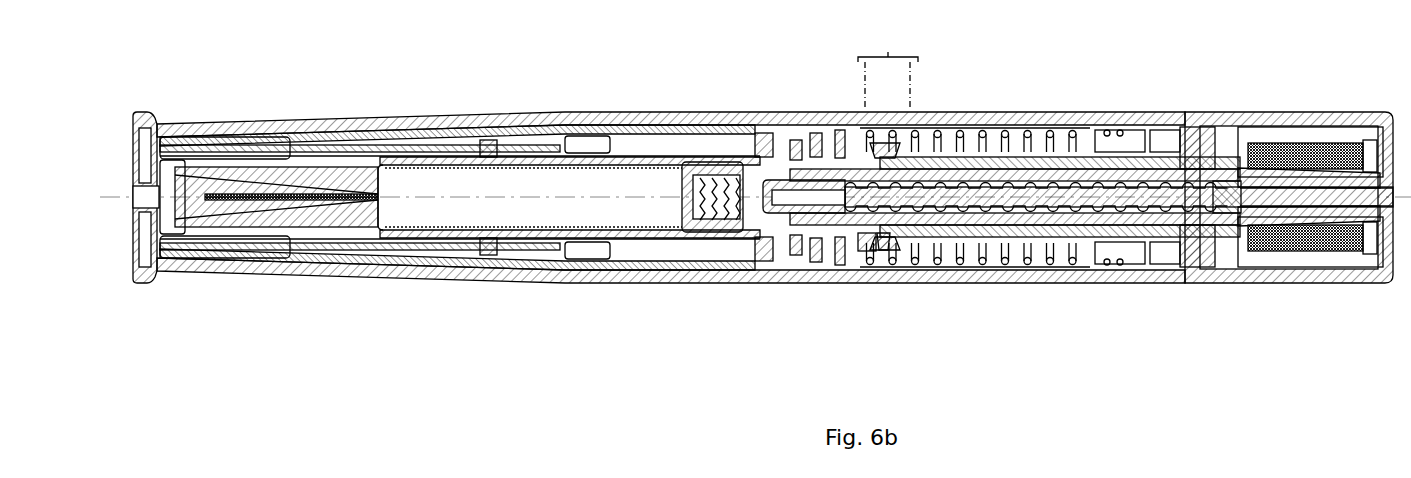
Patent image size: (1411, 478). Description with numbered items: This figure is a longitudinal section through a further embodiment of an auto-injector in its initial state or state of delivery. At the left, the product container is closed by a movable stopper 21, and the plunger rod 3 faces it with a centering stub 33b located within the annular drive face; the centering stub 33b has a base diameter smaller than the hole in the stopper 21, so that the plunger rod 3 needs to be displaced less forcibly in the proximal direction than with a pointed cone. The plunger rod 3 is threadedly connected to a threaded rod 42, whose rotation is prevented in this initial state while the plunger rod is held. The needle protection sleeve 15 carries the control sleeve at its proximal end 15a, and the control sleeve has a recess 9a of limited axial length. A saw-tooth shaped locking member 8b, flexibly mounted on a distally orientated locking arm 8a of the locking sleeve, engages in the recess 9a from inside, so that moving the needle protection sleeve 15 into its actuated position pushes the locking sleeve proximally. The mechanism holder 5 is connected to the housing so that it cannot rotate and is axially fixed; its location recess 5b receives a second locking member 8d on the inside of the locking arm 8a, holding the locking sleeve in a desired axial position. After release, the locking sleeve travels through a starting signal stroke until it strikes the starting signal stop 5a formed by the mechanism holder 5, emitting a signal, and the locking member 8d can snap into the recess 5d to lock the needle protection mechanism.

The needle protection sleeve 15 is at (700, 128).
The proximal end of the needle protection sleeve 15a is at (835, 130).
The recess 9a is at (888, 66).
The locking member 8b is at (890, 140).
The locking arm 8a is at (967, 140).
The stopper 21 is at (695, 215).
The centering stub 33b is at (770, 218).
The location recess 5b is at (878, 238).
The locking member 8d is at (880, 237).
The recess 5d is at (980, 233).
The starting signal stop 5a is at (1085, 237).
The plunger rod 3 is at (1118, 217).
The mechanism holder 5 is at (1190, 253).
The threaded rod 42 is at (1228, 197).